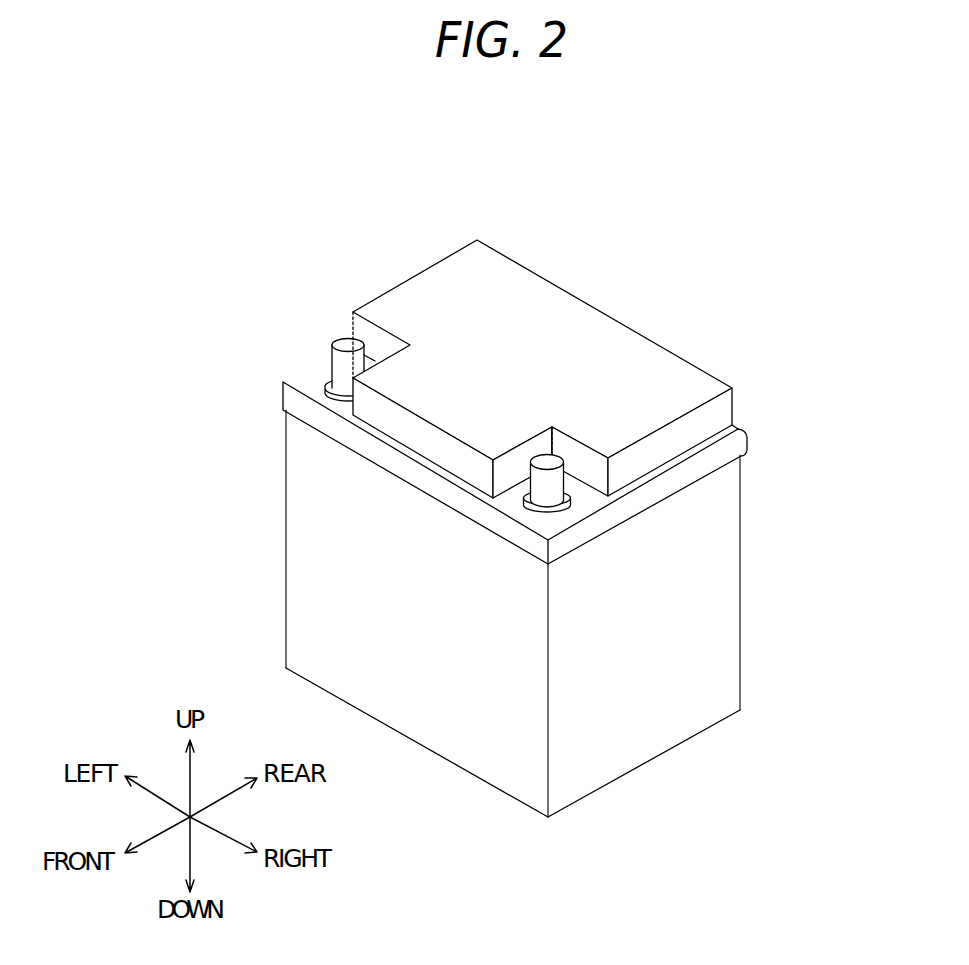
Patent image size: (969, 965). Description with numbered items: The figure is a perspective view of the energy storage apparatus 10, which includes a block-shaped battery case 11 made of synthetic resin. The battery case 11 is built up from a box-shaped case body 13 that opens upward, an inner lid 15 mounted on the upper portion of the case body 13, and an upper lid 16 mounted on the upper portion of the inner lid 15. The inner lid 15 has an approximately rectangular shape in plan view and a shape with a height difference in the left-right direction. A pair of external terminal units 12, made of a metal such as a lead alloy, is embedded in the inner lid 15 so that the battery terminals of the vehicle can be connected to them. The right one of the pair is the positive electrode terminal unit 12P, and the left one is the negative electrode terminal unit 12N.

The energy storage apparatus 10 is at (649, 194).
The battery case 11 is at (718, 576).
The external terminal units 12 is at (340, 314).
The negative electrode terminal unit 12N is at (345, 347).
The positive electrode terminal unit 12P is at (553, 458).
The case body 13 is at (653, 745).
The inner lid 15 is at (308, 383).
The upper lid 16 is at (525, 302).